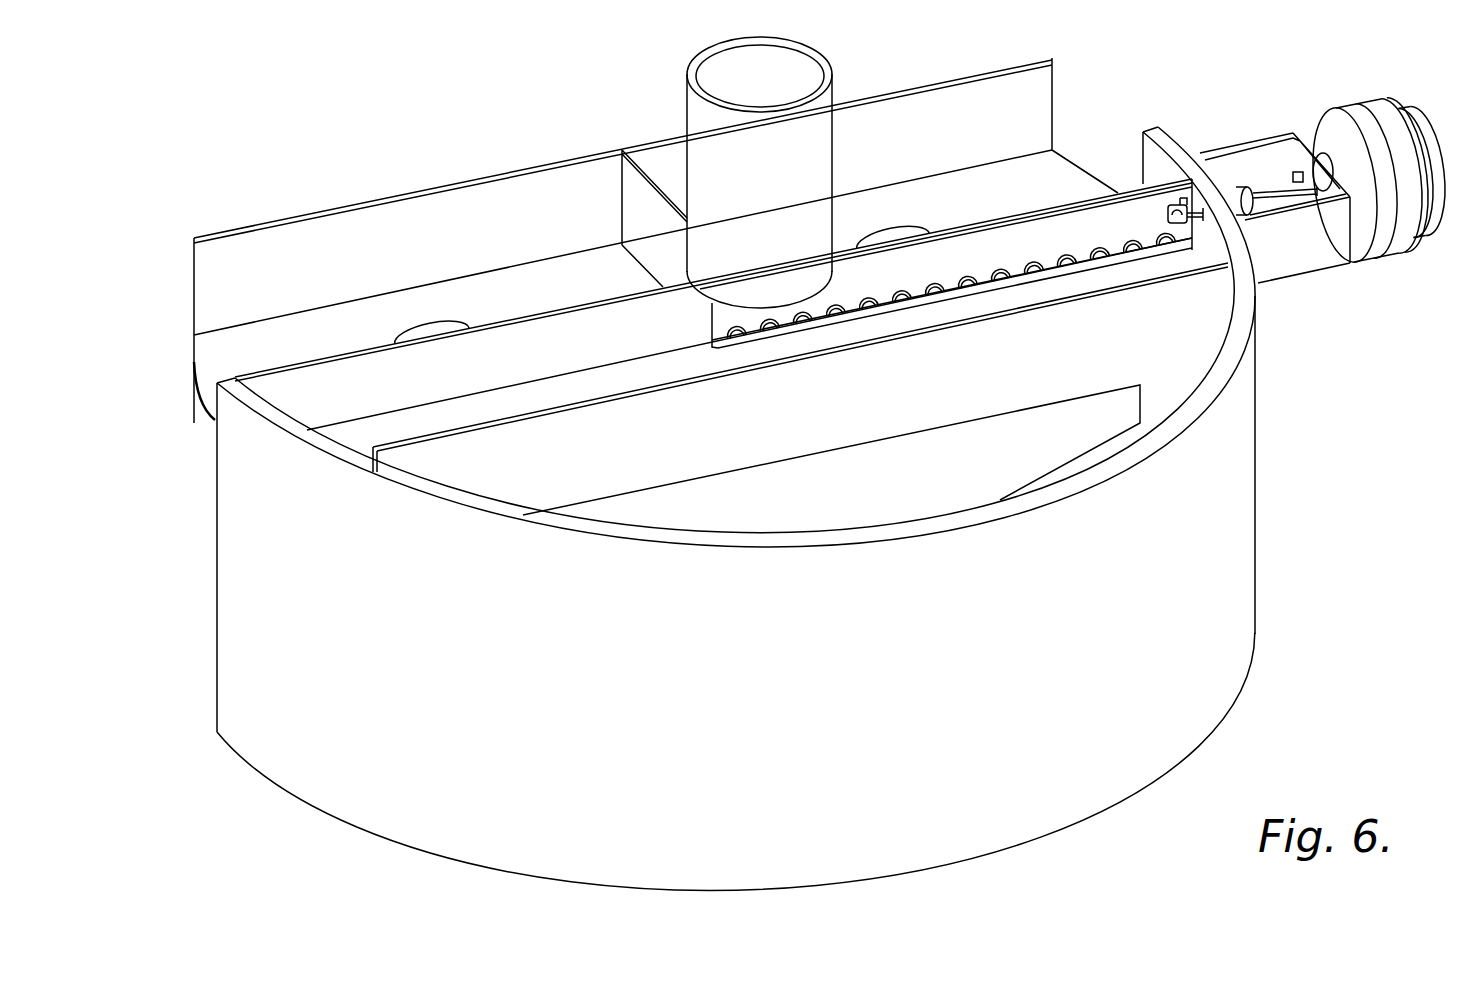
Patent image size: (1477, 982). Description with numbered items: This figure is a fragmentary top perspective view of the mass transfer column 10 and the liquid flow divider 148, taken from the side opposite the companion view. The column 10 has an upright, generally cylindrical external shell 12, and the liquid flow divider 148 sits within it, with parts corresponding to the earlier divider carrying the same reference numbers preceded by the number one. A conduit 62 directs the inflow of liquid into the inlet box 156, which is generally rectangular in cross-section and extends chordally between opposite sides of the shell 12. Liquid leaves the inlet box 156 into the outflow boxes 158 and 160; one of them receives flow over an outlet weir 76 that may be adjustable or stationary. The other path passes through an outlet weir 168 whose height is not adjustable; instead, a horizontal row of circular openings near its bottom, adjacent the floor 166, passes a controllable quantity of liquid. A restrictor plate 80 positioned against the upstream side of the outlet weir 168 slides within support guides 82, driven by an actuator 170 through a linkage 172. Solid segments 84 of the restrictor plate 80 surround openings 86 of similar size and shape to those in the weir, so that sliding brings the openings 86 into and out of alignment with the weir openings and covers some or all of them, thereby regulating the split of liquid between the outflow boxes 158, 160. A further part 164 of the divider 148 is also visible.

The mass transfer column 10 is at (1196, 405).
The external shell 12 is at (1233, 343).
The conduit 62 is at (703, 113).
The outlet weir 76 is at (312, 402).
The restrictor plate 80 is at (712, 318).
The support guides 82 is at (1128, 263).
The solid segments 84 is at (953, 297).
The openings 86 is at (1000, 275).
The liquid flow divider 148 is at (577, 197).
The inlet box 156 is at (537, 380).
The outflow box 158 is at (995, 185).
The outflow box 160 is at (487, 268).
The notch 164 is at (423, 335).
The floor 166 is at (1058, 180).
The outlet weir 168 is at (853, 278).
The actuator 170 is at (1393, 110).
The linkage 172 is at (1276, 204).